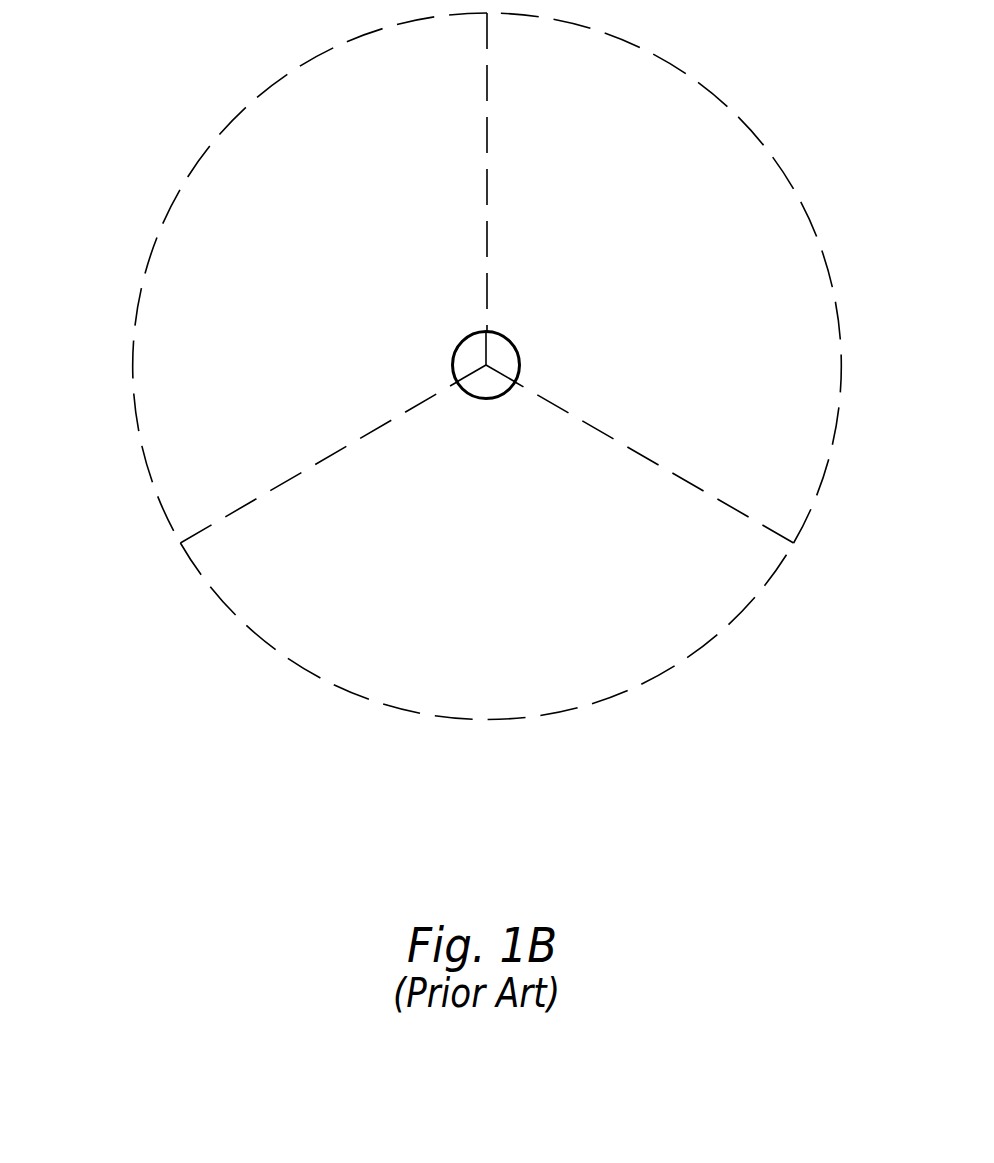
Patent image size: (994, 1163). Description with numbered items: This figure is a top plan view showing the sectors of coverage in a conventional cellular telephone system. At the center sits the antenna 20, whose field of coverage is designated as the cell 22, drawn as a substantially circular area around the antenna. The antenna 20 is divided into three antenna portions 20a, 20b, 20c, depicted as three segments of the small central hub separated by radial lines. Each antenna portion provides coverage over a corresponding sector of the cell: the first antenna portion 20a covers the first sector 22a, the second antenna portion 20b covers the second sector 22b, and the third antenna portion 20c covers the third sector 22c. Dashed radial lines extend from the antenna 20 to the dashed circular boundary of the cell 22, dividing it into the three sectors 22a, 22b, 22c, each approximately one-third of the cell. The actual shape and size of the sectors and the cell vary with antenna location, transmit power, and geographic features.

The antenna 20 is at (447, 322).
The antenna portion 20a is at (453, 357).
The antenna portion 20b is at (489, 399).
The antenna portion 20c is at (520, 355).
The cell 22 is at (148, 610).
The sector 22a is at (134, 413).
The sector 22b is at (312, 673).
The sector 22c is at (822, 247).